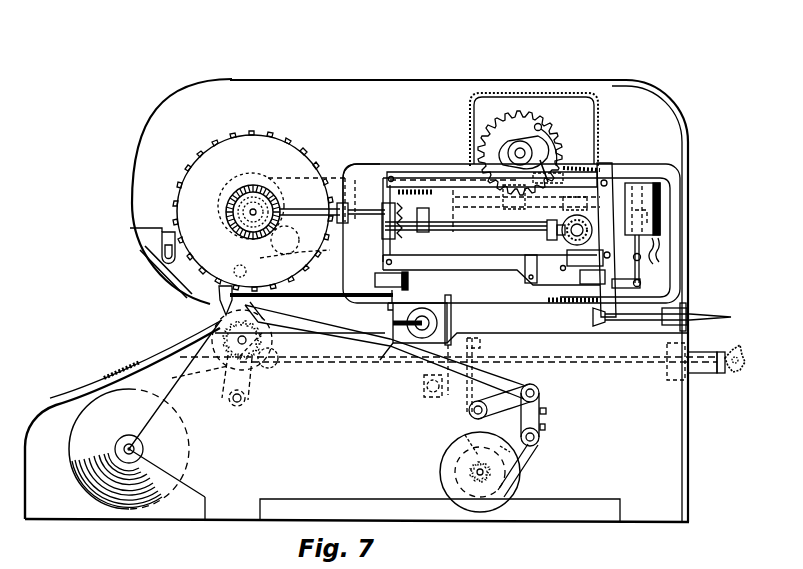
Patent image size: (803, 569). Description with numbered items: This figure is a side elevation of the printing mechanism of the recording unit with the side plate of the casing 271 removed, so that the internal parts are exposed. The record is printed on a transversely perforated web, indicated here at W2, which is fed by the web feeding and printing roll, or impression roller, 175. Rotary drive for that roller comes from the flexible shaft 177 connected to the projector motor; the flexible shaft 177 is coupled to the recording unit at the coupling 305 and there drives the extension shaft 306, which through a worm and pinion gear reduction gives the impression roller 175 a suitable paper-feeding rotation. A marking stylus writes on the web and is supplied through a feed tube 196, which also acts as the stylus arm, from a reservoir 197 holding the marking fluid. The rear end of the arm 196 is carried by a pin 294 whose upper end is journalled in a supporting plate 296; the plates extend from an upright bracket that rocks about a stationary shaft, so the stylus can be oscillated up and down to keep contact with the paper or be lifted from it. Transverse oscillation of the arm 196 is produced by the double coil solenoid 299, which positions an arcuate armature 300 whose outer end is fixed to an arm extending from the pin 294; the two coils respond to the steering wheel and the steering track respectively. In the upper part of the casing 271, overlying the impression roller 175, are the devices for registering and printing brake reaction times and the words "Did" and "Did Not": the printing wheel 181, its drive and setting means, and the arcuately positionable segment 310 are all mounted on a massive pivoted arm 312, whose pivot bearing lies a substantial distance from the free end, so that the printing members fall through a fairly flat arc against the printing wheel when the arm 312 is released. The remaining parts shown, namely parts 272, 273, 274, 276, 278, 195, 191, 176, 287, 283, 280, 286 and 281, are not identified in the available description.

The casing 271 is at (451, 80).
The housing front curved wall 272 is at (155, 130).
The feed chute 273 is at (102, 384).
The web supply roll 274 is at (70, 456).
The base plate 276 is at (236, 503).
The pointer 278 is at (221, 311).
The printing wheel 181 is at (270, 150).
The arcuately positionable segment 310 is at (218, 278).
The pivoted arm 312 is at (338, 180).
The guide member 195 is at (216, 299).
The feed tube 196 is at (311, 298).
The reservoir 197 is at (412, 283).
The pin 294 is at (392, 321).
The plate 296 is at (440, 313).
The double coil solenoid 299 is at (420, 344).
The arcuate armature 300 is at (394, 344).
The plate 191 is at (453, 328).
The impression roller 175 is at (226, 341).
The link arm 176 is at (230, 378).
The web W2 is at (189, 376).
The coupling 305 is at (698, 352).
The extension shaft 306 is at (618, 364).
The flexible shaft 177 is at (736, 374).
The pulley 287 is at (468, 410).
The pulley 283 is at (547, 410).
The pulley 280 is at (540, 449).
The belt 286 is at (523, 483).
The drive wheel 281 is at (442, 476).